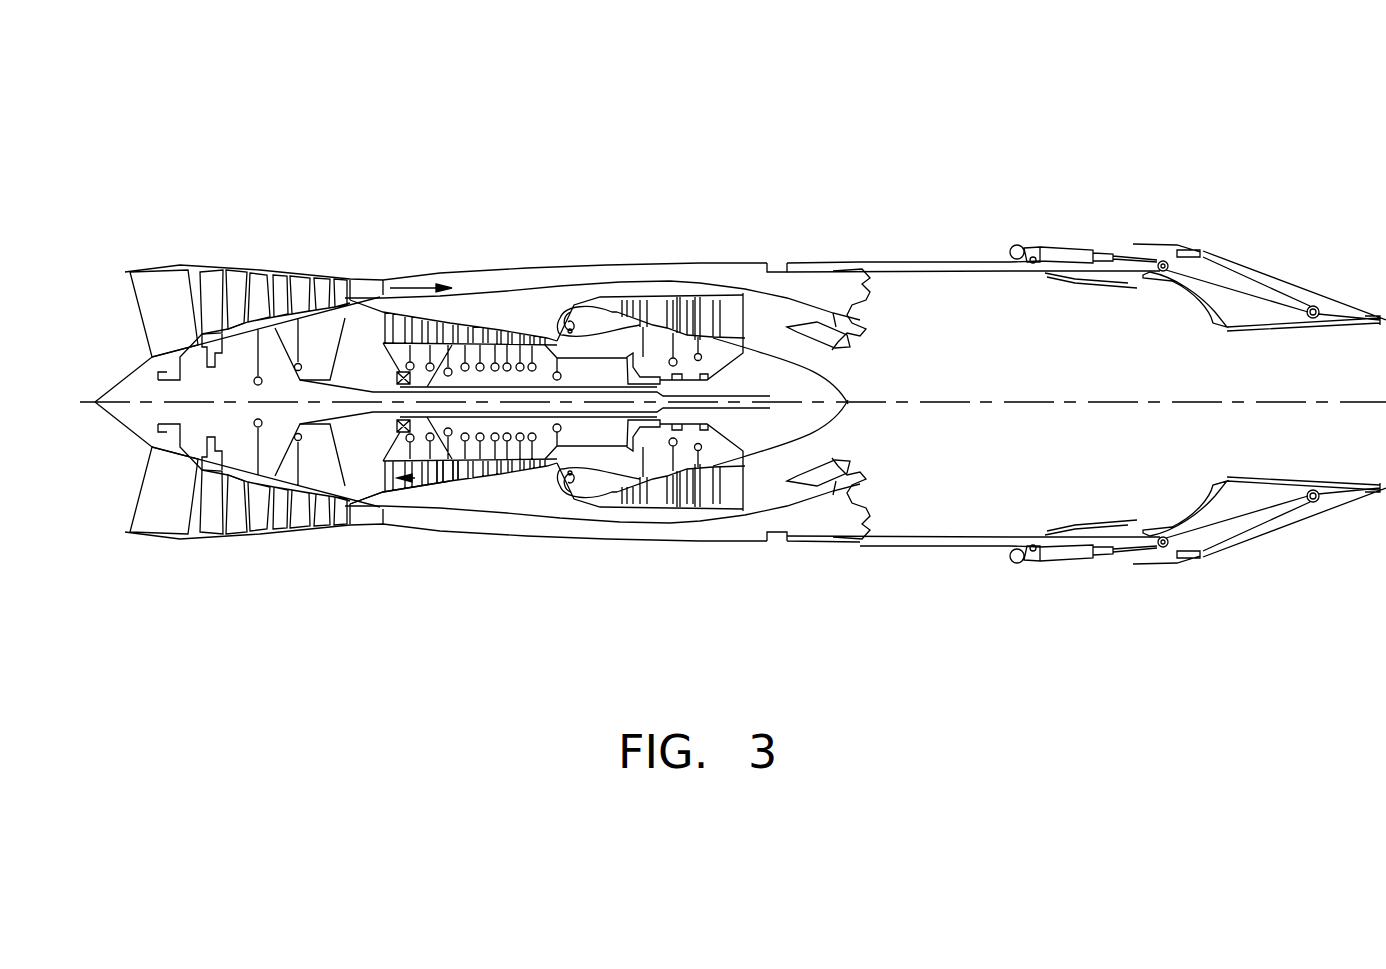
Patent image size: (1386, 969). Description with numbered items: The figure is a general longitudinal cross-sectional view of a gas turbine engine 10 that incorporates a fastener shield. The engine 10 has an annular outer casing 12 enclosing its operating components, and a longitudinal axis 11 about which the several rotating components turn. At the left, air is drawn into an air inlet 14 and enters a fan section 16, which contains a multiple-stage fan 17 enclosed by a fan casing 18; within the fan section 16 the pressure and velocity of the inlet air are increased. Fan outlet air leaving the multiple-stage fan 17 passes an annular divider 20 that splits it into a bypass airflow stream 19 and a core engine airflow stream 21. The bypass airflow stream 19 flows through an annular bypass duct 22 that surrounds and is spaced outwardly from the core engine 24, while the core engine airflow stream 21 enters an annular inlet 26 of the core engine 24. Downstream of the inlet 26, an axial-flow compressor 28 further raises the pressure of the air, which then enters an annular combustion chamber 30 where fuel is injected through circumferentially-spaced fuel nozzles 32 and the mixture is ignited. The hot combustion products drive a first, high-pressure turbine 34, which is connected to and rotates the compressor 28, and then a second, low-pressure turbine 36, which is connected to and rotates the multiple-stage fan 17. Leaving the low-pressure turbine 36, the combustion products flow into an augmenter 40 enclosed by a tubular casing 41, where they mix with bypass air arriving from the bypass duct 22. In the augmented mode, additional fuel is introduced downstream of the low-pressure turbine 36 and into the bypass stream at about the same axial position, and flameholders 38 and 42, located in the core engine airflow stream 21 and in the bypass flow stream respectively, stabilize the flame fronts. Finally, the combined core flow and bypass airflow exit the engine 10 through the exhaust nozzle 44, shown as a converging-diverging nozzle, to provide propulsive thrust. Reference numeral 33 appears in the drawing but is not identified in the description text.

The gas turbine engine 10 is at (212, 90).
The longitudinal axis 11 is at (1279, 402).
The annular outer casing 12 is at (527, 268).
The air inlet 14 is at (155, 303).
The fan section 16 is at (340, 540).
The multiple-stage fan 17 is at (203, 283).
The fan casing 18 is at (233, 272).
The bypass airflow stream 19 is at (413, 282).
The annular divider 20 is at (349, 280).
The core engine airflow stream 21 is at (437, 477).
The annular bypass duct 22 is at (547, 281).
The core engine 24 is at (357, 585).
The annular inlet 26 is at (380, 487).
The axial-flow compressor 28 is at (478, 350).
The annular combustion chamber 30 is at (643, 332).
The fuel nozzles 32 is at (640, 325).
The fuel injector 33 is at (568, 322).
The high-pressure turbine 34 is at (647, 362).
The low-pressure turbine 36 is at (768, 270).
The flameholder 38 is at (838, 330).
The augmenter 40 is at (1063, 347).
The tubular casing 41 is at (952, 268).
The flameholder 42 is at (855, 290).
The exhaust nozzle 44 is at (1213, 316).